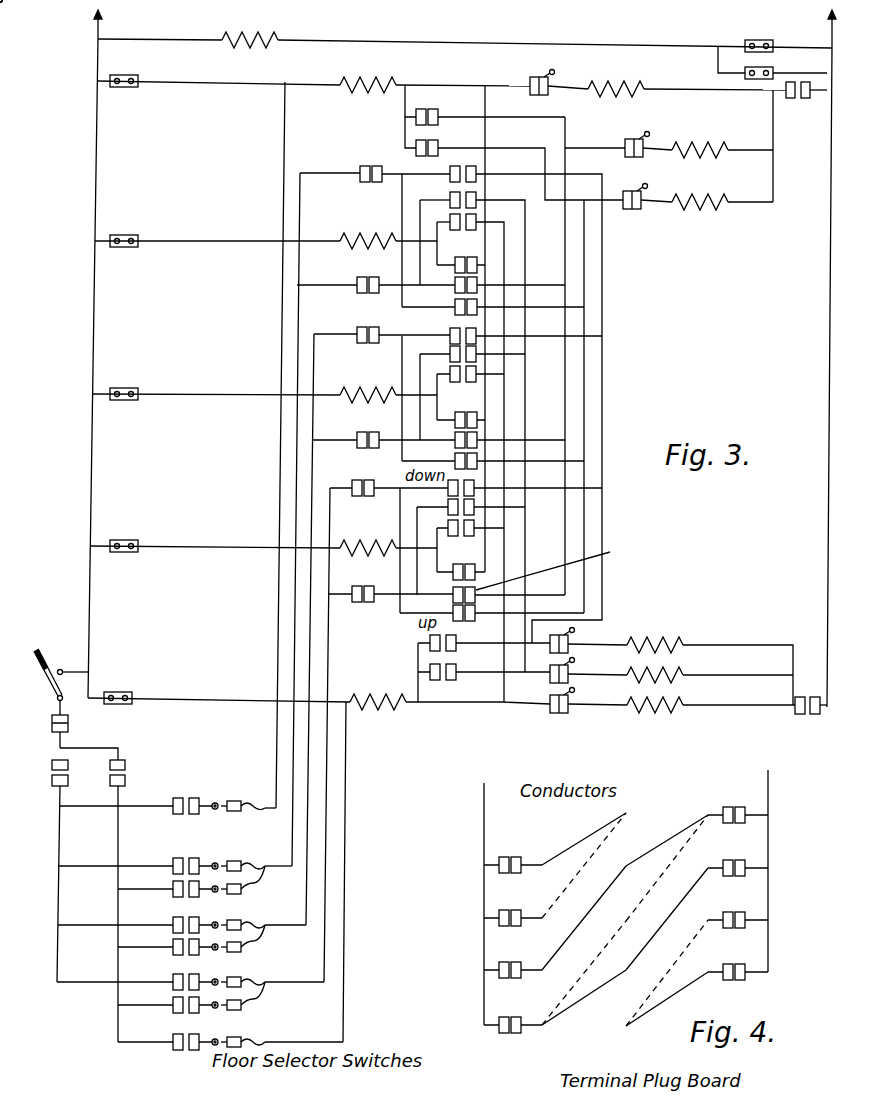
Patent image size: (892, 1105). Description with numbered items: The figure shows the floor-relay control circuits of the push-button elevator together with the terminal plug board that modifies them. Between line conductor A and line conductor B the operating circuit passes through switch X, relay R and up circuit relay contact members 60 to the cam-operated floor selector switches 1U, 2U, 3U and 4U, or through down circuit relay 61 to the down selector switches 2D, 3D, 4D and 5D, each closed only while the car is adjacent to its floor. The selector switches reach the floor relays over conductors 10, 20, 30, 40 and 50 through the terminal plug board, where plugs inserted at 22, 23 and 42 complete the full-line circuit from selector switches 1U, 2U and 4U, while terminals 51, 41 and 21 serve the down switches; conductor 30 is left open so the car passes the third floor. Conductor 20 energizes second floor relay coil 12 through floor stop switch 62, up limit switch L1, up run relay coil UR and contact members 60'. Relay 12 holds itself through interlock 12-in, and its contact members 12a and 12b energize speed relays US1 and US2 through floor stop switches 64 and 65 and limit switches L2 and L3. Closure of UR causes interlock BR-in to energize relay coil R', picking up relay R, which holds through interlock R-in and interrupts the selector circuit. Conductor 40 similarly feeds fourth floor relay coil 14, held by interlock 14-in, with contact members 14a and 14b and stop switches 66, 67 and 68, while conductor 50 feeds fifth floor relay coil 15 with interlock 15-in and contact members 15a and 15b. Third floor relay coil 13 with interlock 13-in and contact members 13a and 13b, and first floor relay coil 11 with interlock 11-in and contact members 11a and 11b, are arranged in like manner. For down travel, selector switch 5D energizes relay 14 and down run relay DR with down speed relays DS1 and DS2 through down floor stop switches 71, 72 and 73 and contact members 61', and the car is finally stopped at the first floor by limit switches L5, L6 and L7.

In FIG. 3, the line conductor A is at (94, 34).
In FIG. 3, the line conductor B is at (830, 34).
In FIG. 3, the relay coil R' is at (465, 31).
In FIG. 3, the interlock of brake relay BR-in is at (739, 37).
In FIG. 3, the interlock of relay R R-in is at (413, 39).
In FIG. 3, the interlock of floor relay 15 15-in is at (170, 43).
In FIG. 3, the fifth floor relay coil 15 is at (374, 84).
In FIG. 3, the contact member of floor relay 15 15a is at (428, 110).
In FIG. 3, the contact member of floor relay 15 15b is at (428, 141).
In FIG. 3, the up limit switch L1 is at (546, 74).
In FIG. 3, the limit switch L2 is at (618, 139).
In FIG. 3, the limit switch L3 is at (644, 192).
In FIG. 3, the limit switch L5 is at (575, 650).
In FIG. 3, the limit switch L6 is at (573, 677).
In FIG. 3, the limit switch L7 is at (564, 709).
In FIG. 3, the up run relay coil UR is at (625, 90).
In FIG. 3, the speed relay US1 is at (685, 150).
In FIG. 3, the speed relay US2 is at (685, 202).
In FIG. 3, the up circuit relay contact members 60' is at (413, 60).
In FIG. 3, the contact member of floor relay 14 14a is at (378, 170).
In FIG. 3, the contact member of floor relay 14 14b is at (364, 278).
In FIG. 3, the interlock of floor relay 14 14-in is at (170, 123).
In FIG. 3, the fourth floor relay coil 14 is at (360, 240).
In FIG. 3, the down floor stop switch 71 is at (521, 397).
In FIG. 3, the down floor stop switch 72 is at (472, 426).
In FIG. 3, the down floor stop switch 73 is at (465, 453).
In FIG. 3, the floor stop switch 66 is at (242, 136).
In FIG. 3, the floor stop switch 67 is at (282, 146).
In FIG. 3, the floor stop switch 68 is at (456, 310).
In FIG. 3, the contact member of floor relay 13 13b is at (364, 328).
In FIG. 3, the contact member of floor relay 13 13a is at (364, 434).
In FIG. 3, the interlock of floor relay 13 13-in is at (170, 200).
In FIG. 3, the third floor relay coil 13 is at (360, 396).
In FIG. 3, the contact member of floor relay 12 12b is at (374, 480).
In FIG. 3, the contact member of floor relay 12 12a is at (366, 606).
In FIG. 3, the interlock of floor relay 12 12-in is at (170, 276).
In FIG. 3, the second floor relay coil 12 is at (366, 548).
In FIG. 3, the floor stop switch 62 is at (466, 568).
In FIG. 3, the floor stop switch 64 is at (492, 602).
In FIG. 3, the floor stop switch 65 is at (468, 614).
In FIG. 3, the interlock of floor relay 11 11-in is at (219, 688).
In FIG. 3, the first floor relay coil 11 is at (380, 700).
In FIG. 3, the contact member of floor relay 11 11a is at (452, 684).
In FIG. 3, the contact member of floor relay 11 11b is at (452, 654).
In FIG. 3, the down speed relay DS2 is at (710, 663).
In FIG. 3, the down speed relay DS1 is at (396, 341).
In FIG. 3, the down run relay DR is at (711, 698).
In FIG. 3, the down circuit relay contact members 61' is at (811, 722).
In FIG. 3, the switch X is at (48, 688).
In FIG. 3, the relay R is at (70, 724).
In FIG. 3, the up circuit relay contact members 60 is at (71, 871).
In FIG. 3, the down circuit relay 61 is at (129, 900).
In FIG. 3, the floor selector switch 4U is at (178, 798).
In FIG. 4, the floor selector switch 4U is at (522, 848).
In FIG. 3, the floor selector switch 3U is at (172, 858).
In FIG. 4, the floor selector switch 3U is at (522, 901).
In FIG. 3, the floor selector switch 2U is at (172, 917).
In FIG. 4, the floor selector switch 2U is at (522, 954).
In FIG. 3, the floor selector switch 1U is at (172, 974).
In FIG. 4, the floor selector switch 1U is at (522, 1008).
In FIG. 3, the floor selector switch 5D is at (196, 898).
In FIG. 4, the floor selector switch 5D is at (748, 790).
In FIG. 3, the floor selector switch 4D is at (196, 956).
In FIG. 4, the floor selector switch 4D is at (740, 878).
In FIG. 3, the floor selector switch 3D is at (196, 1014).
In FIG. 4, the floor selector switch 3D is at (728, 930).
In FIG. 3, the floor selector switch 2D is at (170, 1034).
In FIG. 4, the floor selector switch 2D is at (735, 982).
In FIG. 3, the conductor 50 is at (264, 806).
In FIG. 4, the conductor 50 is at (628, 815).
In FIG. 3, the conductor 40 is at (280, 864).
In FIG. 4, the conductor 40 is at (628, 868).
In FIG. 3, the conductor 30 is at (282, 920).
In FIG. 4, the conductor 30 is at (628, 923).
In FIG. 3, the conductor 20 is at (268, 980).
In FIG. 4, the conductor 20 is at (628, 972).
In FIG. 3, the conductor 10 is at (292, 1039).
In FIG. 4, the conductor 10 is at (624, 1026).
In FIG. 4, the terminal 51 is at (708, 814).
In FIG. 4, the terminal 41 is at (710, 865).
In FIG. 4, the terminal 21 is at (708, 969).
In FIG. 4, the plug terminal 42 is at (552, 876).
In FIG. 4, the plug terminal 23 is at (544, 973).
In FIG. 4, the plug terminal 22 is at (544, 1027).